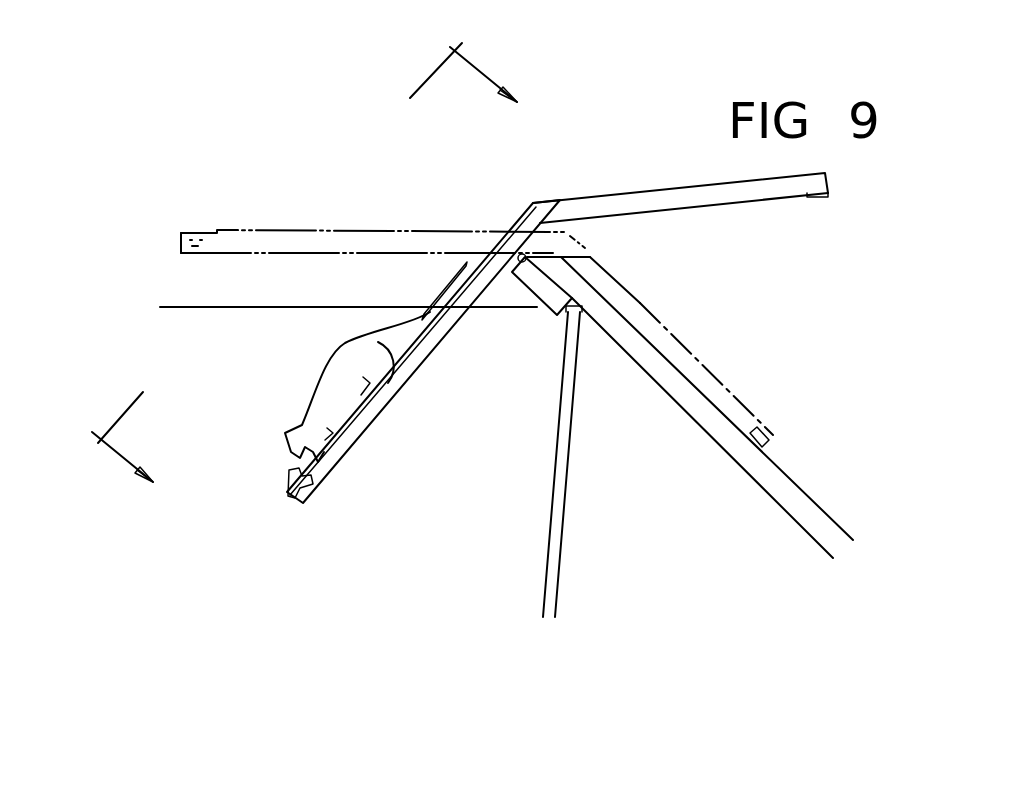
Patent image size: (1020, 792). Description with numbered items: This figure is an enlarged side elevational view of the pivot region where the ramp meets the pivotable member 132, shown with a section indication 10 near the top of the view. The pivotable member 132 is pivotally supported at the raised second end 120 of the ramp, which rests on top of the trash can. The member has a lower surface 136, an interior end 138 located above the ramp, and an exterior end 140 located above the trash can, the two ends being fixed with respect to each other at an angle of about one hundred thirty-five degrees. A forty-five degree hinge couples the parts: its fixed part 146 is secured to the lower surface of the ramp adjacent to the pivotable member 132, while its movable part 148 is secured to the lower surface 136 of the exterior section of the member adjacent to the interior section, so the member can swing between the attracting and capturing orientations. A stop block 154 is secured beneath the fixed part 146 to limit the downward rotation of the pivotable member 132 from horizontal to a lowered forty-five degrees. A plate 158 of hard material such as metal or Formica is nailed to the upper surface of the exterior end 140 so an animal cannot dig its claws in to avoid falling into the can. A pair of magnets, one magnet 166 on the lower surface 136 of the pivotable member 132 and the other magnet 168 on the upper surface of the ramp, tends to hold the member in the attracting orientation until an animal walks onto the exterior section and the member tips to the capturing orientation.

The section line 10 is at (283, 242).
The plate 158 is at (263, 231).
The pivotable member 132 is at (517, 215).
The lower surface 136 is at (582, 198).
The interior end 138 is at (770, 197).
The magnet 166 is at (826, 196).
The raised second end 120 is at (598, 257).
The fixed part 146 is at (580, 288).
The magnet 168 is at (770, 437).
The movable part 148 is at (480, 292).
The stop block 154 is at (545, 312).
The exterior end 140 is at (380, 408).